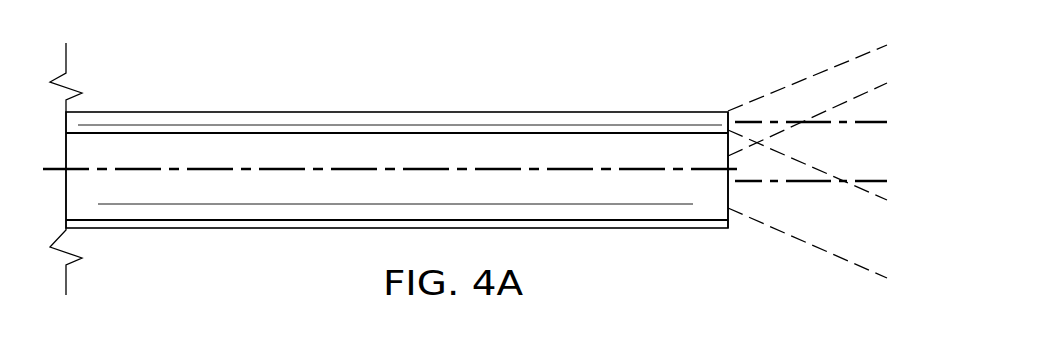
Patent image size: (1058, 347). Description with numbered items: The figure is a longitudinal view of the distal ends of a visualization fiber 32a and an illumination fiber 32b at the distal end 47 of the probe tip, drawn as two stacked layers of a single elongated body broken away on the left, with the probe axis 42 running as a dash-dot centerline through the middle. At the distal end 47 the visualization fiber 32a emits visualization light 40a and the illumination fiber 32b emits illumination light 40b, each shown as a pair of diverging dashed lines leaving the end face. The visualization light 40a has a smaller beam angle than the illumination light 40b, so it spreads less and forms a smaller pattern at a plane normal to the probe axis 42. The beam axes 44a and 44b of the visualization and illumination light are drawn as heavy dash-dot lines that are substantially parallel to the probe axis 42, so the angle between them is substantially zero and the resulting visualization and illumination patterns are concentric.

The visualization fiber 32a is at (452, 120).
The illumination fiber 32b is at (303, 220).
The probe axis 42 is at (215, 168).
The distal end 47 is at (716, 96).
The visualization light 40a is at (808, 88).
The illumination light 40b is at (808, 235).
The axis of visualization light 44a is at (873, 124).
The axis of illumination light 44b is at (873, 182).